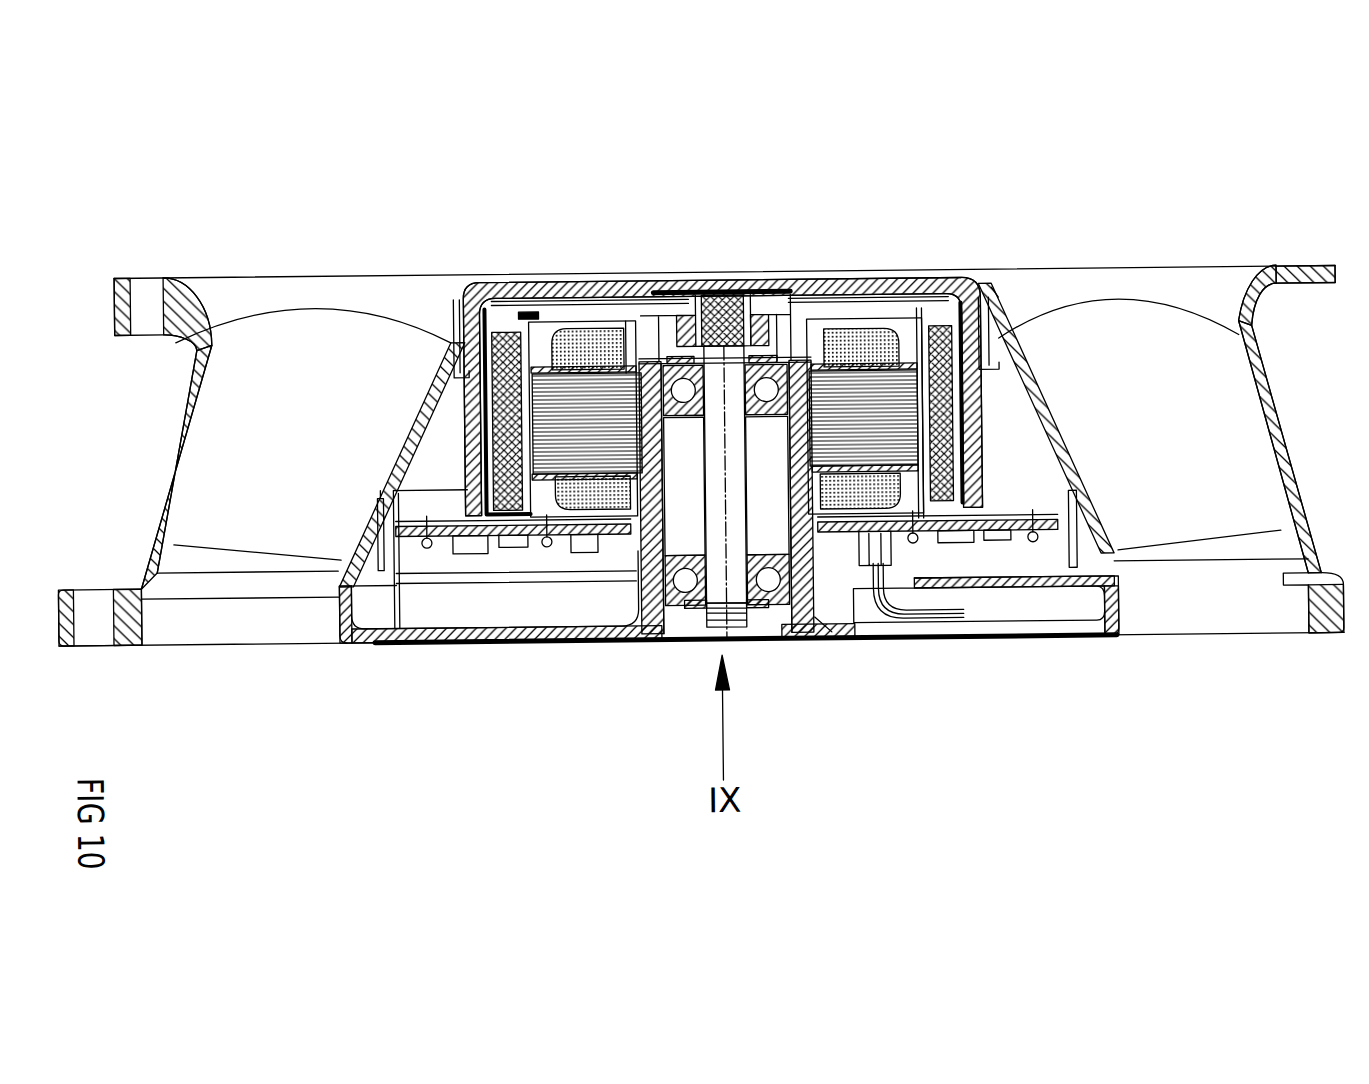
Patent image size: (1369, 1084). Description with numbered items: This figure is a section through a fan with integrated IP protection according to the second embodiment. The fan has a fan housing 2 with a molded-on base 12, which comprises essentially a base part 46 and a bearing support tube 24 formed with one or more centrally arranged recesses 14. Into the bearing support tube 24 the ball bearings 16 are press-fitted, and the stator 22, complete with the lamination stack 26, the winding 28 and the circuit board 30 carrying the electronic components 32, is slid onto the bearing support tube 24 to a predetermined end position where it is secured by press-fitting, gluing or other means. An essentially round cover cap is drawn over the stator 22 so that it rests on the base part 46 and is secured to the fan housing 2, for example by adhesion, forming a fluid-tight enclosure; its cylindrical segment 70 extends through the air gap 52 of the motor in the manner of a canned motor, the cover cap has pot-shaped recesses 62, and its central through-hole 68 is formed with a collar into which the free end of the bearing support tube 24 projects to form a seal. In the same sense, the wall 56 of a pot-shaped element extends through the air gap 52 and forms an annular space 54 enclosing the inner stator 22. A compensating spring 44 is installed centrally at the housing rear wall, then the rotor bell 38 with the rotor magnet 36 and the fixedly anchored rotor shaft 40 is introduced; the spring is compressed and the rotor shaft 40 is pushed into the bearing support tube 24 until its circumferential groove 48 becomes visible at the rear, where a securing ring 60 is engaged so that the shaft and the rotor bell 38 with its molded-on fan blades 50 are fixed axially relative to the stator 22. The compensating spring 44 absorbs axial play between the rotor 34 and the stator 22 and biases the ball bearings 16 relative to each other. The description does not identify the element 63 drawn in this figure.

The fan housing 2 is at (1257, 378).
The base 12 is at (812, 618).
The recesses 14 is at (767, 287).
The ball bearings 16 is at (693, 352).
The stator 22 is at (828, 326).
The bearing support tube 24 is at (903, 340).
The lamination stack 26 is at (460, 345).
The winding 28 is at (880, 505).
The circuit board 30 is at (848, 535).
The electronic components 32 is at (512, 544).
The rotor 34 is at (700, 296).
The rotor magnet 36 is at (977, 416).
The rotor bell 38 is at (475, 300).
The rotor shaft 40 is at (762, 600).
The compensating spring 44 is at (801, 279).
The base part 46 is at (372, 628).
The circumferential groove 48 is at (733, 543).
The fan blades 50 is at (258, 362).
The air gap 52 is at (470, 399).
The annular space 54 is at (947, 308).
The wall 56 is at (550, 316).
The securing ring 60 is at (700, 612).
The pot-shaped recesses 62 is at (538, 314).
The housing cover 63 is at (408, 620).
The through-hole 68 is at (667, 311).
The cylindrical segment 70 is at (993, 358).